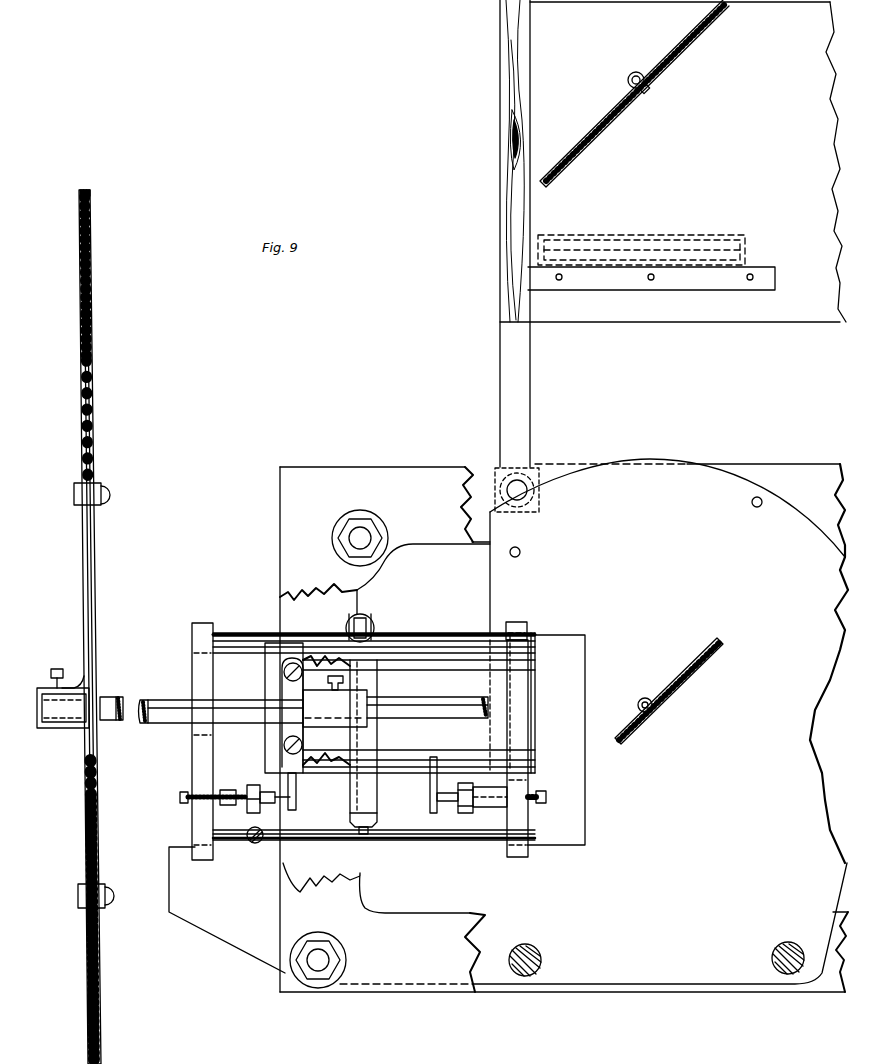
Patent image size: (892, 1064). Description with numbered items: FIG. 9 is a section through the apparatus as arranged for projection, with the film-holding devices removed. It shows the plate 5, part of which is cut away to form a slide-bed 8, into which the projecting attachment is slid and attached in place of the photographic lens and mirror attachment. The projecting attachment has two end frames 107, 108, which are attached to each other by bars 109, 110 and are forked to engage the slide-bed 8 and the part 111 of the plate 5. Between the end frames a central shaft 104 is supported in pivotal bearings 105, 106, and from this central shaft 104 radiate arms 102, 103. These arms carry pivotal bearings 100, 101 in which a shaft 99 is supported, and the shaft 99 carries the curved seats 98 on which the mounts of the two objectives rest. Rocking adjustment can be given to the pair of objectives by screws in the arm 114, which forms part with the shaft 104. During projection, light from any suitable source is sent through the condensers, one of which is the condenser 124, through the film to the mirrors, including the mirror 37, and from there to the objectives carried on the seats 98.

The plate 5 is at (508, 725).
The slide-bed 8 is at (550, 845).
The mirror 37 is at (670, 690).
The curved seats 98 is at (298, 784).
The shaft 99 is at (380, 813).
The pivotal bearing 100 is at (266, 805).
The pivotal bearing 101 is at (455, 804).
The arm 102 is at (250, 810).
The arm 103 is at (473, 808).
The central shaft 104 is at (490, 790).
The pivotal bearing 105 is at (215, 795).
The pivotal bearing 106 is at (540, 795).
The end frame 107 is at (190, 759).
The end frame 108 is at (530, 819).
The bar 109 is at (232, 642).
The bar 110 is at (455, 832).
The part of plate 111 is at (533, 626).
The arm 114 is at (256, 846).
The condenser 124 is at (639, 248).